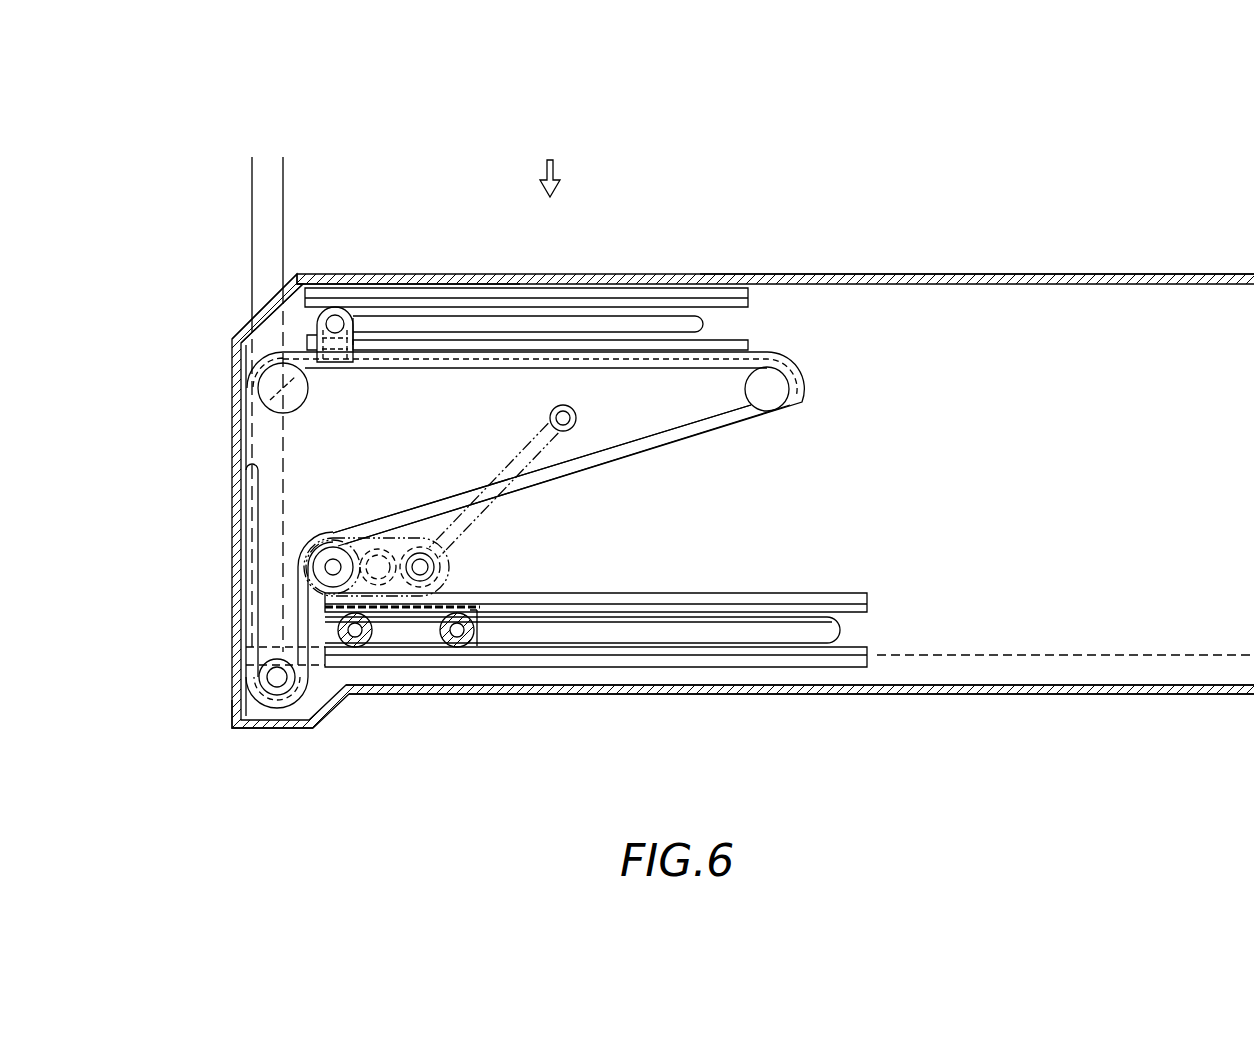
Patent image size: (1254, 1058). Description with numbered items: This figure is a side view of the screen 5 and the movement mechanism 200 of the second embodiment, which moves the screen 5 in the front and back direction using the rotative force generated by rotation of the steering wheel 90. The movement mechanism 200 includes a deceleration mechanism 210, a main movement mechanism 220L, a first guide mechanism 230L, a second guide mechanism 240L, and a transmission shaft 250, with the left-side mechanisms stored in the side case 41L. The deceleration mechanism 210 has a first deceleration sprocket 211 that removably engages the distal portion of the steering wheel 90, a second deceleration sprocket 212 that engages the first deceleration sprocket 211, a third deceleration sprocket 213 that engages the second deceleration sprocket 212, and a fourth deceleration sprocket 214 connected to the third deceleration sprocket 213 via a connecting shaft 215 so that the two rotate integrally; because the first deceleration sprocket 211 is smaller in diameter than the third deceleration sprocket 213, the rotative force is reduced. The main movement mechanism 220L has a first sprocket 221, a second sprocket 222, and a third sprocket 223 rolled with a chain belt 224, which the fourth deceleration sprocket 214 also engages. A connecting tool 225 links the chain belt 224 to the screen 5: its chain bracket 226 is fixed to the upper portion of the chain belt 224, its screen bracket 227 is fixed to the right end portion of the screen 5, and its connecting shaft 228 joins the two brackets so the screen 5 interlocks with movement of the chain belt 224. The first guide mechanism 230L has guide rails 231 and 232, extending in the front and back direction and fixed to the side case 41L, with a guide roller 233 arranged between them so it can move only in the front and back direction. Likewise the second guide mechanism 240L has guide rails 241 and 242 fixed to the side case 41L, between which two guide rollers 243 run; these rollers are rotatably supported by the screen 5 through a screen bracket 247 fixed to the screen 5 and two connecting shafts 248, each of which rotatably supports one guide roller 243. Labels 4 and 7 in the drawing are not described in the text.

The movement mechanism 200 is at (167, 218).
The viewing direction 4 is at (551, 160).
The screen 5 is at (250, 455).
The reference line 7 is at (900, 653).
The steering wheel 90 is at (512, 462).
The deceleration mechanism 210 is at (481, 551).
The first deceleration sprocket 211 is at (428, 548).
The second deceleration sprocket 212 is at (378, 552).
The third deceleration sprocket 213 is at (336, 553).
The fourth deceleration sprocket 214 is at (296, 575).
The connecting shaft 215 is at (320, 557).
The main movement mechanism 220L is at (738, 450).
The first sprocket 221 is at (236, 705).
The second sprocket 222 is at (302, 396).
The third sprocket 223 is at (746, 388).
The chain belt 224 is at (684, 448).
The connecting tool 225 is at (358, 273).
The chain bracket 226 is at (356, 322).
The screen bracket 227 is at (292, 333).
The connecting shaft 228 is at (333, 314).
The first guide mechanism 230L is at (598, 270).
The guide rail 231 is at (752, 297).
The guide rail 232 is at (750, 338).
The guide roller 233 is at (350, 366).
The second guide mechanism 240L is at (551, 701).
The guide rail 241 is at (722, 592).
The guide rail 242 is at (722, 668).
The guide roller 243 is at (462, 646).
The screen bracket 247 is at (270, 617).
The connecting shaft 248 is at (458, 645).
The transmission shaft 250 is at (277, 682).
The side case 41L is at (790, 273).